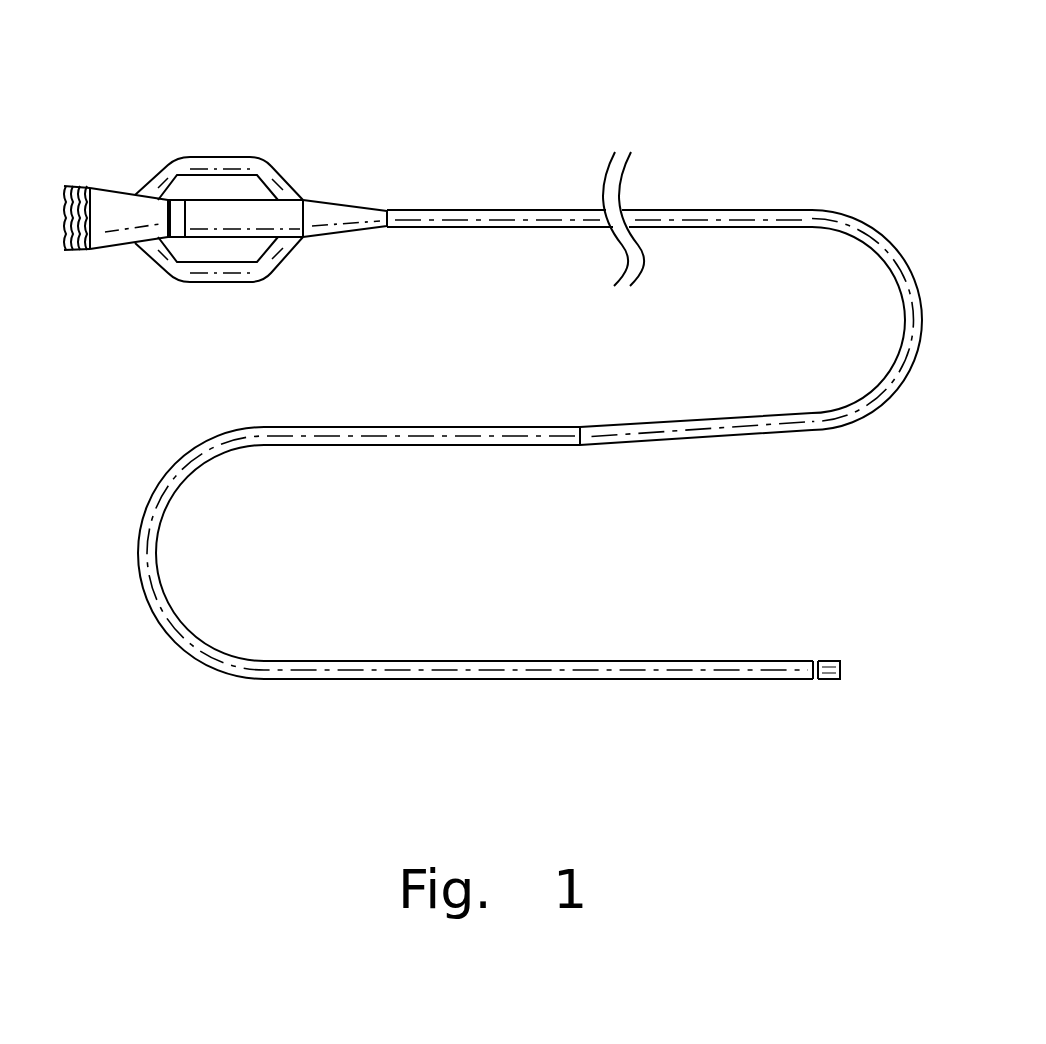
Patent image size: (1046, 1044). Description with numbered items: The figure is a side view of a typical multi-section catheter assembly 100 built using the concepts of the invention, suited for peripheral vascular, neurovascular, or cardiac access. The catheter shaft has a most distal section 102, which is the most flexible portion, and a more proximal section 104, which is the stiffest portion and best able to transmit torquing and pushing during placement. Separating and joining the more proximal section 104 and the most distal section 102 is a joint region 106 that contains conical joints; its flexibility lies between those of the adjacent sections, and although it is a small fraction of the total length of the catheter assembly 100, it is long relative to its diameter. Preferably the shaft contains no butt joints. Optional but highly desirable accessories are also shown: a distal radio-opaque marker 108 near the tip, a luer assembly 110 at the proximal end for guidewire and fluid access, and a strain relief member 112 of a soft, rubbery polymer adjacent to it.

The catheter assembly 100 is at (744, 88).
The most distal section 102 is at (165, 528).
The more proximal section 104 is at (492, 208).
The joint region 106 is at (713, 445).
The distal radio-opaque marker 108 is at (817, 680).
The luer assembly 110 is at (207, 156).
The strain relief member 112 is at (336, 210).